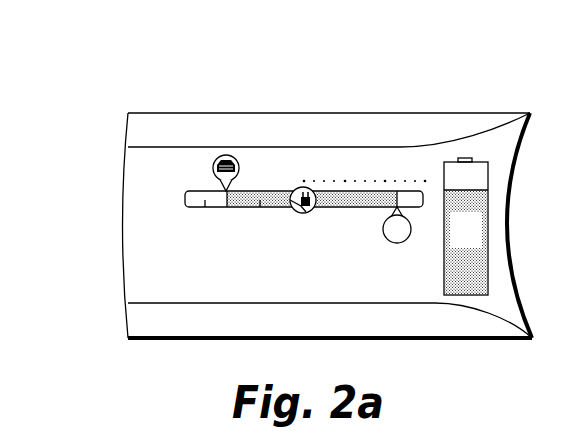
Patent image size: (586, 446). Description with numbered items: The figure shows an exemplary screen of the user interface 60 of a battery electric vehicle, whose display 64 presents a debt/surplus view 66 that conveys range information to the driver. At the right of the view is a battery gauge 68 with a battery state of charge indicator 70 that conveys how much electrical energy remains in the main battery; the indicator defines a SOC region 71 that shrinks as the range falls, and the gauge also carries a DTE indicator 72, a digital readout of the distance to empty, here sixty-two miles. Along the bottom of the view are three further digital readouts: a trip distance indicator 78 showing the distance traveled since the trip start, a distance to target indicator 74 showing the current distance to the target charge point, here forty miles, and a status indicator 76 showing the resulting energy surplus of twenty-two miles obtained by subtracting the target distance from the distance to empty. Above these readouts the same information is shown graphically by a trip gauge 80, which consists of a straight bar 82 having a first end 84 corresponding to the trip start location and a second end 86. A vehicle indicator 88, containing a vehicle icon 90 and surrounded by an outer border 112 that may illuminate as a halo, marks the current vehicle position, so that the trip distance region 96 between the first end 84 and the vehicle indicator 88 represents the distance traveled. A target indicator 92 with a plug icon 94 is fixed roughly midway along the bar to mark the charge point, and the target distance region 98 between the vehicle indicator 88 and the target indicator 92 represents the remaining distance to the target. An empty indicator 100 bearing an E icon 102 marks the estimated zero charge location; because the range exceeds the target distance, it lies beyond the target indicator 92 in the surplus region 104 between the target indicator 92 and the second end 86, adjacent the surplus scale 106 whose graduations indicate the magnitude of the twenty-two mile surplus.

The user interface 60 is at (107, 75).
The display 64 is at (123, 313).
The debt/surplus view 66 is at (144, 262).
The battery gauge 68 is at (529, 113).
The battery state of charge indicator 70 is at (466, 189).
The SOC region 71 is at (468, 297).
The DTE indicator 72 is at (485, 245).
The distance to target indicator 74 is at (297, 313).
The status indicator 76 is at (398, 315).
The trip distance indicator 78 is at (212, 313).
The trip gauge 80 is at (133, 187).
The bar 82 is at (292, 198).
The first end 84 is at (185, 200).
The second end 86 is at (427, 196).
The vehicle indicator 88 is at (224, 156).
The vehicle icon 90 is at (248, 191).
The target indicator 92 is at (295, 187).
The plug icon 94 is at (296, 212).
The trip distance region 96 is at (205, 208).
The target distance region 98 is at (260, 208).
The empty indicator 100 is at (388, 216).
The E icon 102 is at (396, 243).
The surplus region 104 is at (333, 197).
The surplus scale 106 is at (388, 150).
The outer border 112 is at (213, 163).